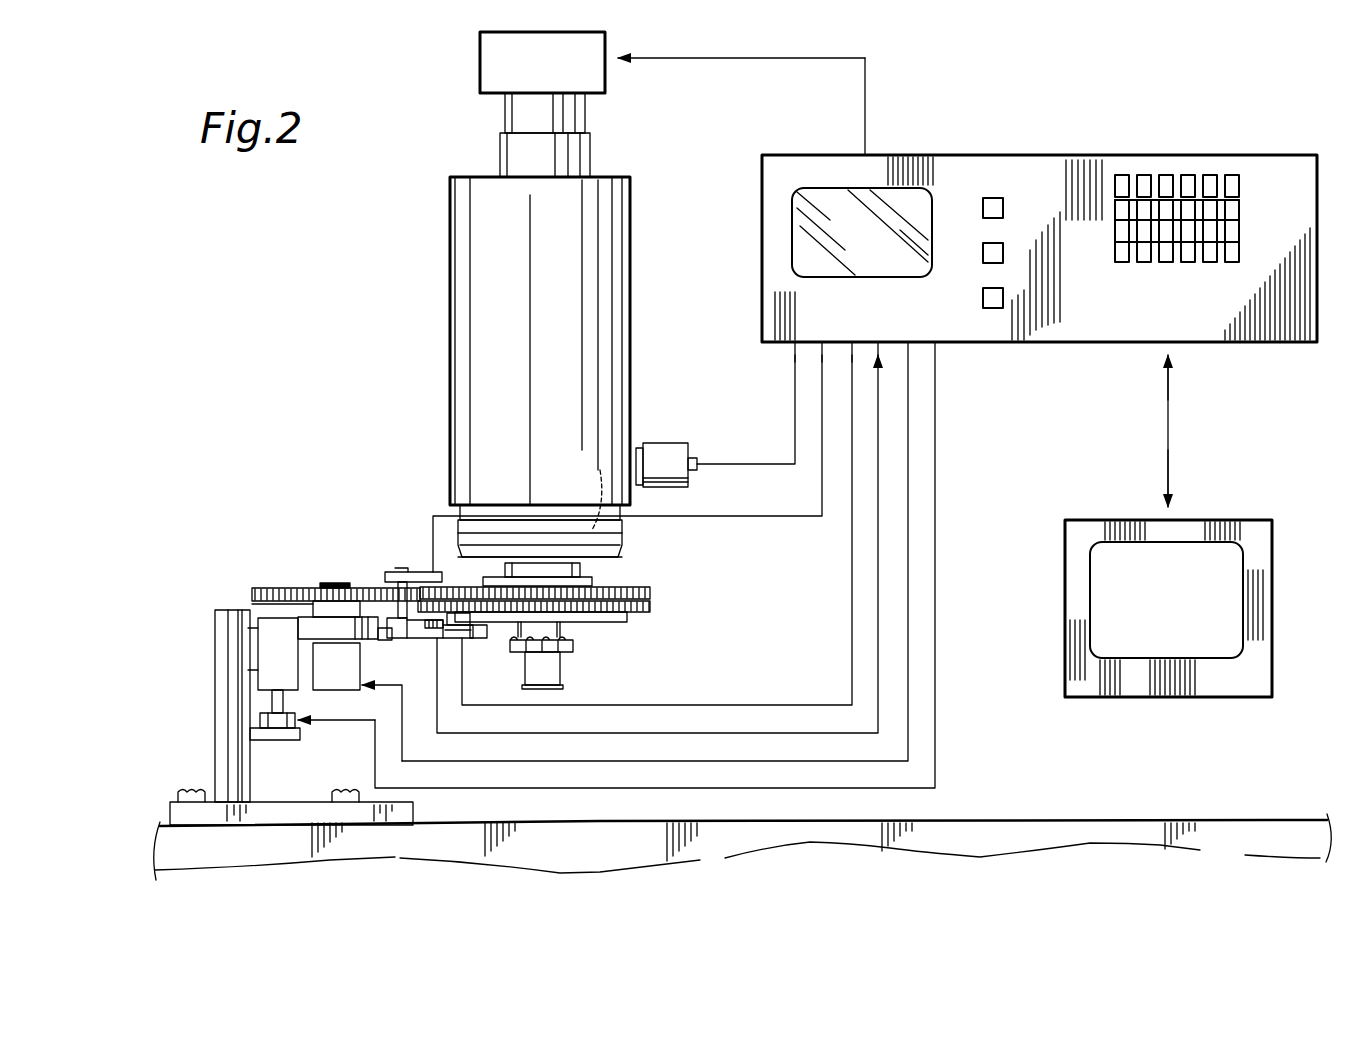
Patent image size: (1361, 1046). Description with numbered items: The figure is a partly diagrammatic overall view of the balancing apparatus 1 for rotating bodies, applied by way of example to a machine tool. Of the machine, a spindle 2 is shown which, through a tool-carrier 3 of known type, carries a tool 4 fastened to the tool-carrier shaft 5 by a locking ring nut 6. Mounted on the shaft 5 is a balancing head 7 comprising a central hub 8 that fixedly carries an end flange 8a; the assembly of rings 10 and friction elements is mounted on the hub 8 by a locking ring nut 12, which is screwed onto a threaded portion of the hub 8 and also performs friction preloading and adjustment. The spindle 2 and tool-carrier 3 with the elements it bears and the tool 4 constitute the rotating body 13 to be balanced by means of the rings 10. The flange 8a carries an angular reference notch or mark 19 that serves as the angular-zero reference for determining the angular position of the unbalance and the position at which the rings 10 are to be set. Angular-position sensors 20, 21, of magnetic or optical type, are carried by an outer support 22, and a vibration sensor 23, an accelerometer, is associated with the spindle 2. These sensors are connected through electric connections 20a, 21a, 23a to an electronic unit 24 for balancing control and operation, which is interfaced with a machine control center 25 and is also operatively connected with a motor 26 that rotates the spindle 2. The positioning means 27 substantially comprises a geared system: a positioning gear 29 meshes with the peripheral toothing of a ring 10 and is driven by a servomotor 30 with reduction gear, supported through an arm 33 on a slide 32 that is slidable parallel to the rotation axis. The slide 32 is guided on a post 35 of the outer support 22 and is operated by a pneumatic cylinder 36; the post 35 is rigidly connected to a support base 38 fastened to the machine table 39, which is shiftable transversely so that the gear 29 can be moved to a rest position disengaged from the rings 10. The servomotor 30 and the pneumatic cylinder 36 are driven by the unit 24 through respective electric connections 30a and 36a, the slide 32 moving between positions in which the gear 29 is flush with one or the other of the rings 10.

The balancing apparatus 1 is at (323, 422).
The spindle 2 is at (508, 274).
The tool-carrier 3 is at (636, 550).
The tool 4 is at (551, 685).
The tool-carrier shaft 5 is at (553, 632).
The locking ring nut 6 is at (560, 655).
The balancing head 7 is at (447, 514).
The central hub 8 is at (590, 497).
The end flange 8a is at (623, 622).
The rings 10 is at (653, 592).
The locking ring nut 12 is at (604, 579).
The rotating body 13 is at (643, 530).
The angular reference notch or mark 19 is at (468, 625).
The angular-position sensor 20 is at (433, 572).
The electric connection 20a is at (745, 517).
The angular-position sensor 21 is at (487, 630).
The electric connection 21a is at (691, 704).
The outer support 22 is at (389, 636).
The vibration sensor 23 is at (664, 445).
The electric connection 23a is at (726, 464).
The electronic unit 24 is at (1237, 343).
The machine control center 25 is at (1228, 520).
The motor 26 is at (564, 84).
The positioning means 27 is at (300, 540).
The positioning gear 29 is at (298, 586).
The servomotor 30 is at (352, 682).
The electric connection 30a is at (912, 662).
The slide 32 is at (294, 683).
The arm 33 is at (311, 631).
The post 35 is at (216, 734).
The pneumatic cylinder 36 is at (275, 730).
The electric connection 36a is at (937, 722).
The support base 38 is at (318, 800).
The machine table 39 is at (948, 819).